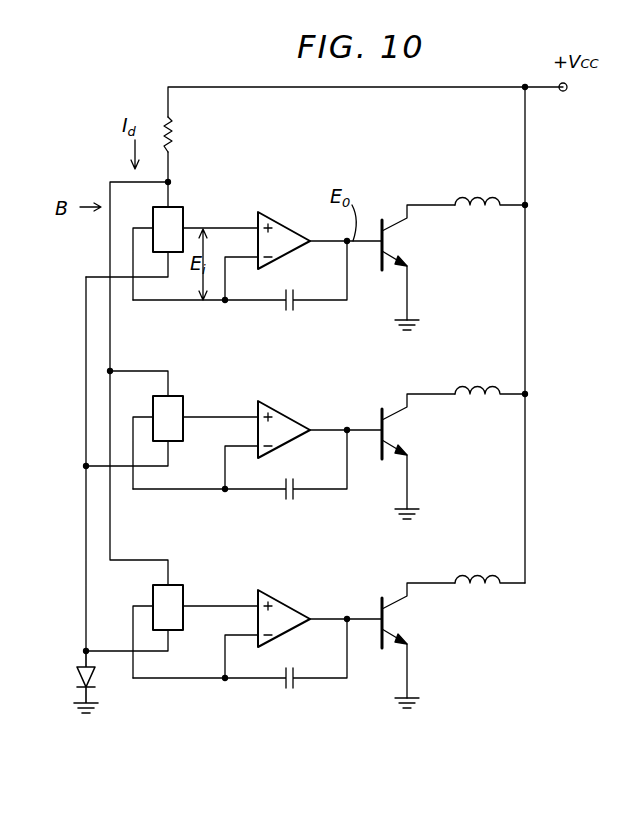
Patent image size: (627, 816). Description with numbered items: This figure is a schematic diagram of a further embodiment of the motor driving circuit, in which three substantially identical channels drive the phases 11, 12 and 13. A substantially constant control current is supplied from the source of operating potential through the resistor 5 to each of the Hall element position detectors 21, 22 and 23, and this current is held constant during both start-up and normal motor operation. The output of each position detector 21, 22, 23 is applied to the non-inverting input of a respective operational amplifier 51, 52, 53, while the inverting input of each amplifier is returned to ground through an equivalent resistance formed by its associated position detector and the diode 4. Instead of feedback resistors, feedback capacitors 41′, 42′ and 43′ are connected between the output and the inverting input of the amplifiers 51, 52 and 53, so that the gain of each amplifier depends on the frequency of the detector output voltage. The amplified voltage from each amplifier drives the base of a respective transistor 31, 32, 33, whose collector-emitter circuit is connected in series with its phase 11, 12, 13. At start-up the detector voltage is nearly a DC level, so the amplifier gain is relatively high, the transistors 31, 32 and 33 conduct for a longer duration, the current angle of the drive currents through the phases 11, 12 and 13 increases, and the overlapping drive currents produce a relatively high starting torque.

The diode 4 is at (74, 672).
The resistor 5 is at (176, 131).
The phase 11 is at (470, 212).
The phase 12 is at (478, 401).
The phase 13 is at (478, 590).
The position detector 21 is at (174, 214).
The position detector 22 is at (172, 404).
The position detector 23 is at (174, 594).
The transistor 31 is at (382, 265).
The transistor 32 is at (382, 453).
The transistor 33 is at (382, 643).
The feedback capacitor 41′ is at (290, 312).
The feedback capacitor 42′ is at (290, 501).
The feedback capacitor 43′ is at (290, 690).
The amplifier 51 is at (288, 250).
The amplifier 52 is at (285, 440).
The amplifier 53 is at (290, 628).